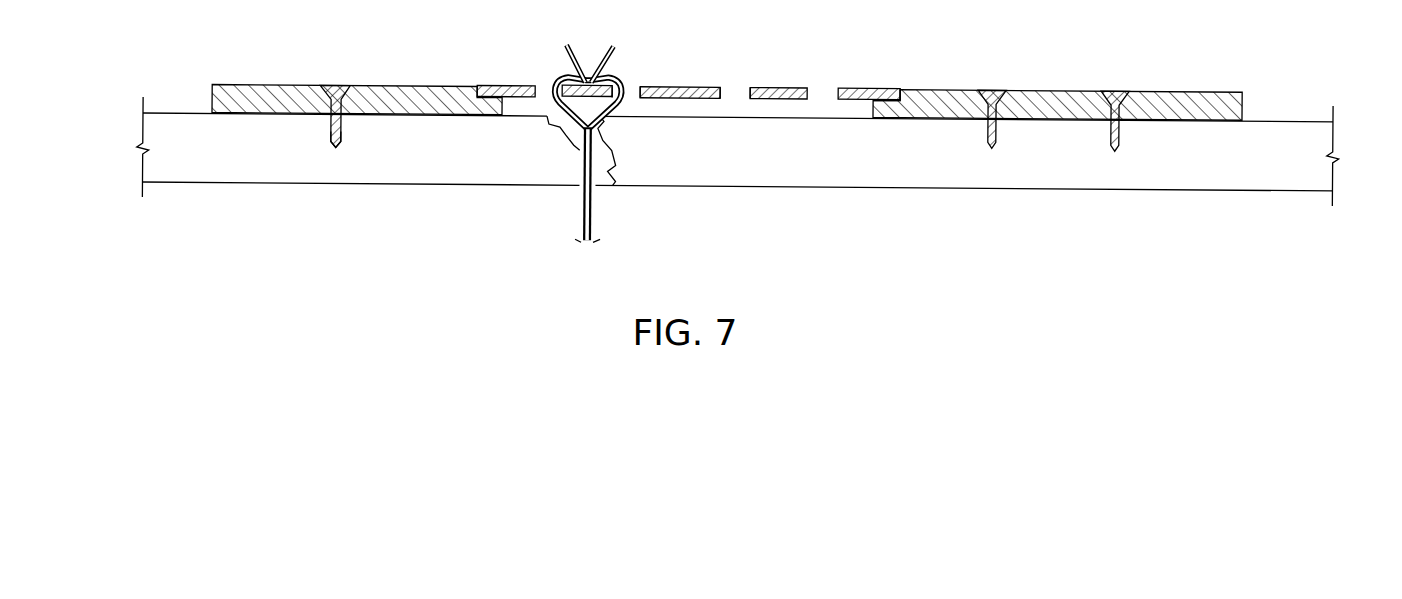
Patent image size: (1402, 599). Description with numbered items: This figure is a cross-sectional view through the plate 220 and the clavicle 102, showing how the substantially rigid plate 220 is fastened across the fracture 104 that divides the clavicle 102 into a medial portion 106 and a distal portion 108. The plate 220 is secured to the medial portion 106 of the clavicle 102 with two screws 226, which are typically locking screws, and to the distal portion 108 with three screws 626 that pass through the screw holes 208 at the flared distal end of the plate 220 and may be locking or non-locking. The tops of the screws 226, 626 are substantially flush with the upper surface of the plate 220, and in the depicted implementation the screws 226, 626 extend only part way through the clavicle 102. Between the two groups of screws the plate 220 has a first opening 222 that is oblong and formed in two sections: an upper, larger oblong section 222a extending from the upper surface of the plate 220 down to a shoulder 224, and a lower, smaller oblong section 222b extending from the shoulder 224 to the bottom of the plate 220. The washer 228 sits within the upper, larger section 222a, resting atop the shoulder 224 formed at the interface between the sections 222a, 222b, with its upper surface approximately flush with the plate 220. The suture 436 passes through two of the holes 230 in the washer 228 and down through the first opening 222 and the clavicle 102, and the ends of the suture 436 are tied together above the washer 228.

The clavicle 102 is at (1267, 177).
The fracture 104 is at (612, 187).
The medial portion 106 is at (773, 172).
The distal portion 108 is at (410, 170).
The screw holes 208 is at (333, 100).
The plate 220 is at (1203, 95).
The first opening 222 is at (663, 110).
The upper, larger oblong section 222a is at (738, 85).
The lower, smaller oblong section 222b is at (848, 108).
The shoulder 224 is at (877, 100).
The screws 226 is at (1104, 93).
The washer 228 is at (778, 84).
The holes 230 is at (542, 80).
The suture 436 is at (565, 68).
The screws 626 is at (328, 132).